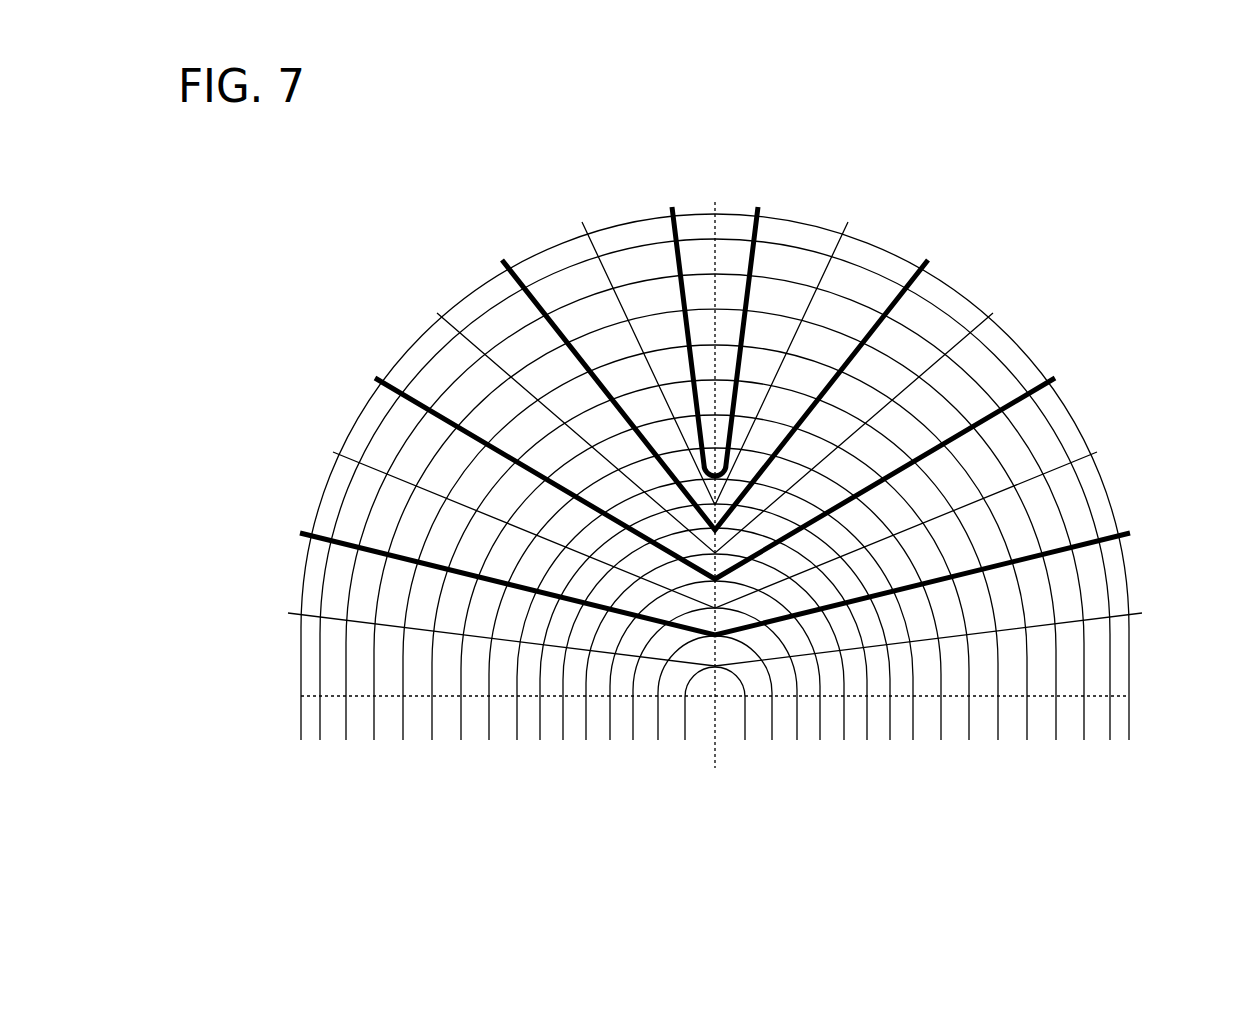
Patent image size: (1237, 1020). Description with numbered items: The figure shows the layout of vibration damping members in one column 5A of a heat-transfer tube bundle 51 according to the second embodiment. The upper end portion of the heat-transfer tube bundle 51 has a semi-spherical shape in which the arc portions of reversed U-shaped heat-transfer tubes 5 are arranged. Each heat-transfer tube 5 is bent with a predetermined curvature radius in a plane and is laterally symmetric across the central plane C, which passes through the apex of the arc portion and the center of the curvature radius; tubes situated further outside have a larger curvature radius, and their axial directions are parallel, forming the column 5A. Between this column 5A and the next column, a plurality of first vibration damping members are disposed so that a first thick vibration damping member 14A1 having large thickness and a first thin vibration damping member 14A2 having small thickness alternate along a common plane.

The heat-transfer tube 5 is at (1080, 608).
The column 5A is at (1010, 224).
The heat-transfer tube bundle 51 is at (269, 698).
The first thick vibration damping member 14A1 is at (505, 258).
The first thin vibration damping member 14A2 is at (582, 222).
The central plane C is at (715, 501).